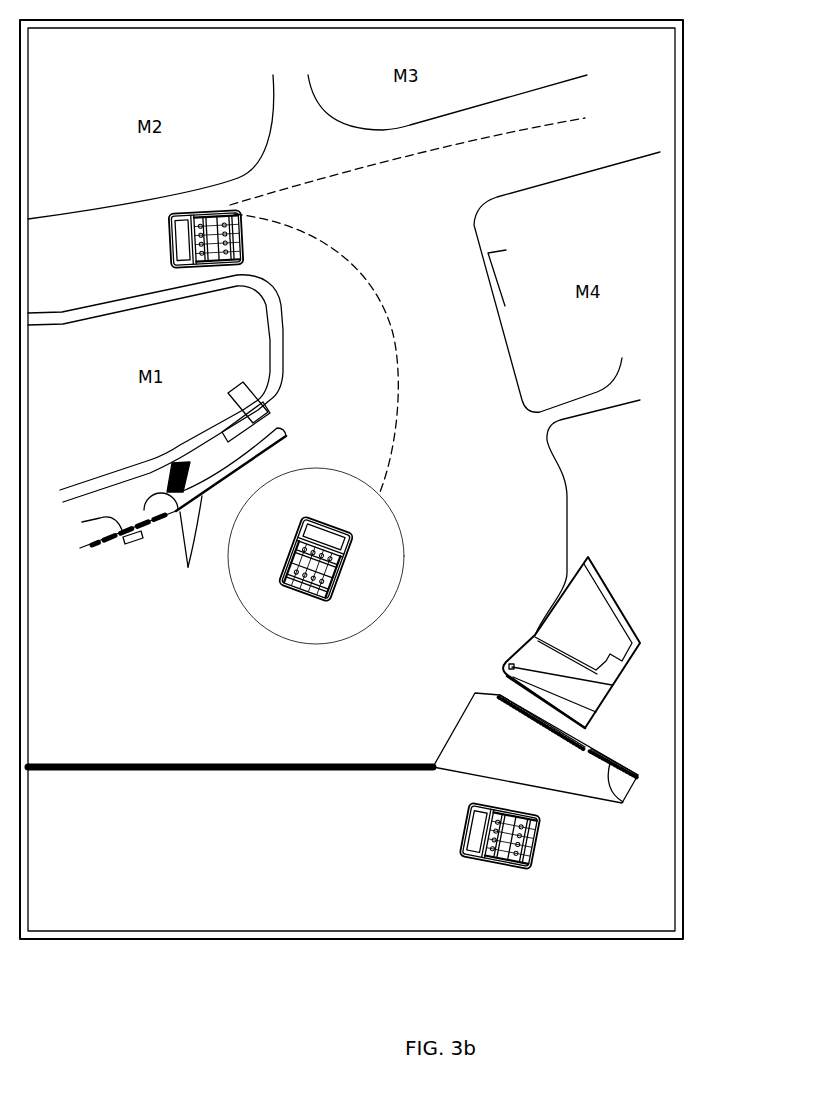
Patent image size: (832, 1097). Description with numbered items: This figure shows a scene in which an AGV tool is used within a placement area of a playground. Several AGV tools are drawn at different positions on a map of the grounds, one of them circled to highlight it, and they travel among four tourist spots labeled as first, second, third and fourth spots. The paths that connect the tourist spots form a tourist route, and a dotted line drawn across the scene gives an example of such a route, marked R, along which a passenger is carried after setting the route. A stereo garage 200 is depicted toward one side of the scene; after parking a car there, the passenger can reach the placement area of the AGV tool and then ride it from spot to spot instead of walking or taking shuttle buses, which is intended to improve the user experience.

The stereo garage 200 is at (622, 803).
The route R is at (419, 158).